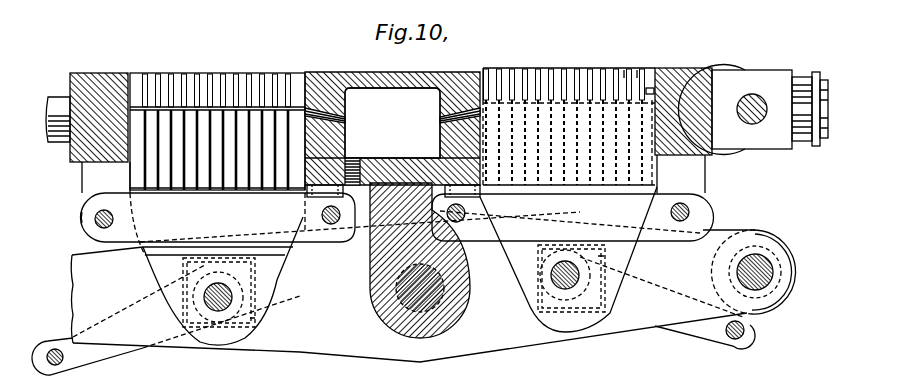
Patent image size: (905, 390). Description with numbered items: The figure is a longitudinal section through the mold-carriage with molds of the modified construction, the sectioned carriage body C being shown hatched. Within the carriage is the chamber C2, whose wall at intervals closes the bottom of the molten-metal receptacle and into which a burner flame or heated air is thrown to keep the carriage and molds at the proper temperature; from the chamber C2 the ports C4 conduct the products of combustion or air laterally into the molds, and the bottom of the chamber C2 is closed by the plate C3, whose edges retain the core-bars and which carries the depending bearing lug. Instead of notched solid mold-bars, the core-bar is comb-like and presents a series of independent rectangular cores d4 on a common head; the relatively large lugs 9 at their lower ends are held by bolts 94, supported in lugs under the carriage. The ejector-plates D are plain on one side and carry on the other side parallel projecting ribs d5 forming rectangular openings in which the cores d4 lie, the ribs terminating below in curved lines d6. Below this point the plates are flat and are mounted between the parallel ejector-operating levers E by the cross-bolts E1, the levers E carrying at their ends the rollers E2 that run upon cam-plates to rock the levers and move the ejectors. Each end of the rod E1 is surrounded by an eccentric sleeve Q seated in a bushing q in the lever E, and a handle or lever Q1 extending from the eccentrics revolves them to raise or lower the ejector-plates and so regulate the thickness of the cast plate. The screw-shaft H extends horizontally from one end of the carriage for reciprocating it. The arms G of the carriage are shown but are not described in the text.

The mold-carriage body C is at (324, 73).
The chamber C2 is at (392, 123).
The plate C3 is at (420, 258).
The ports C4 is at (346, 120).
The cores d4 is at (200, 73).
The ejector-plates D is at (566, 68).
The ribs d5 is at (641, 70).
The curved lines d6 is at (654, 91).
The screw-shaft H is at (807, 142).
The link arm G is at (672, 191).
The bolts 94 is at (95, 216).
The lugs 9 is at (81, 229).
The ejector-operating levers E is at (537, 338).
The cross-bolts E1 is at (391, 286).
The rollers E2 is at (768, 247).
The eccentric sleeve Q is at (237, 287).
The bushing q is at (255, 318).
The handle or lever Q1 is at (110, 350).